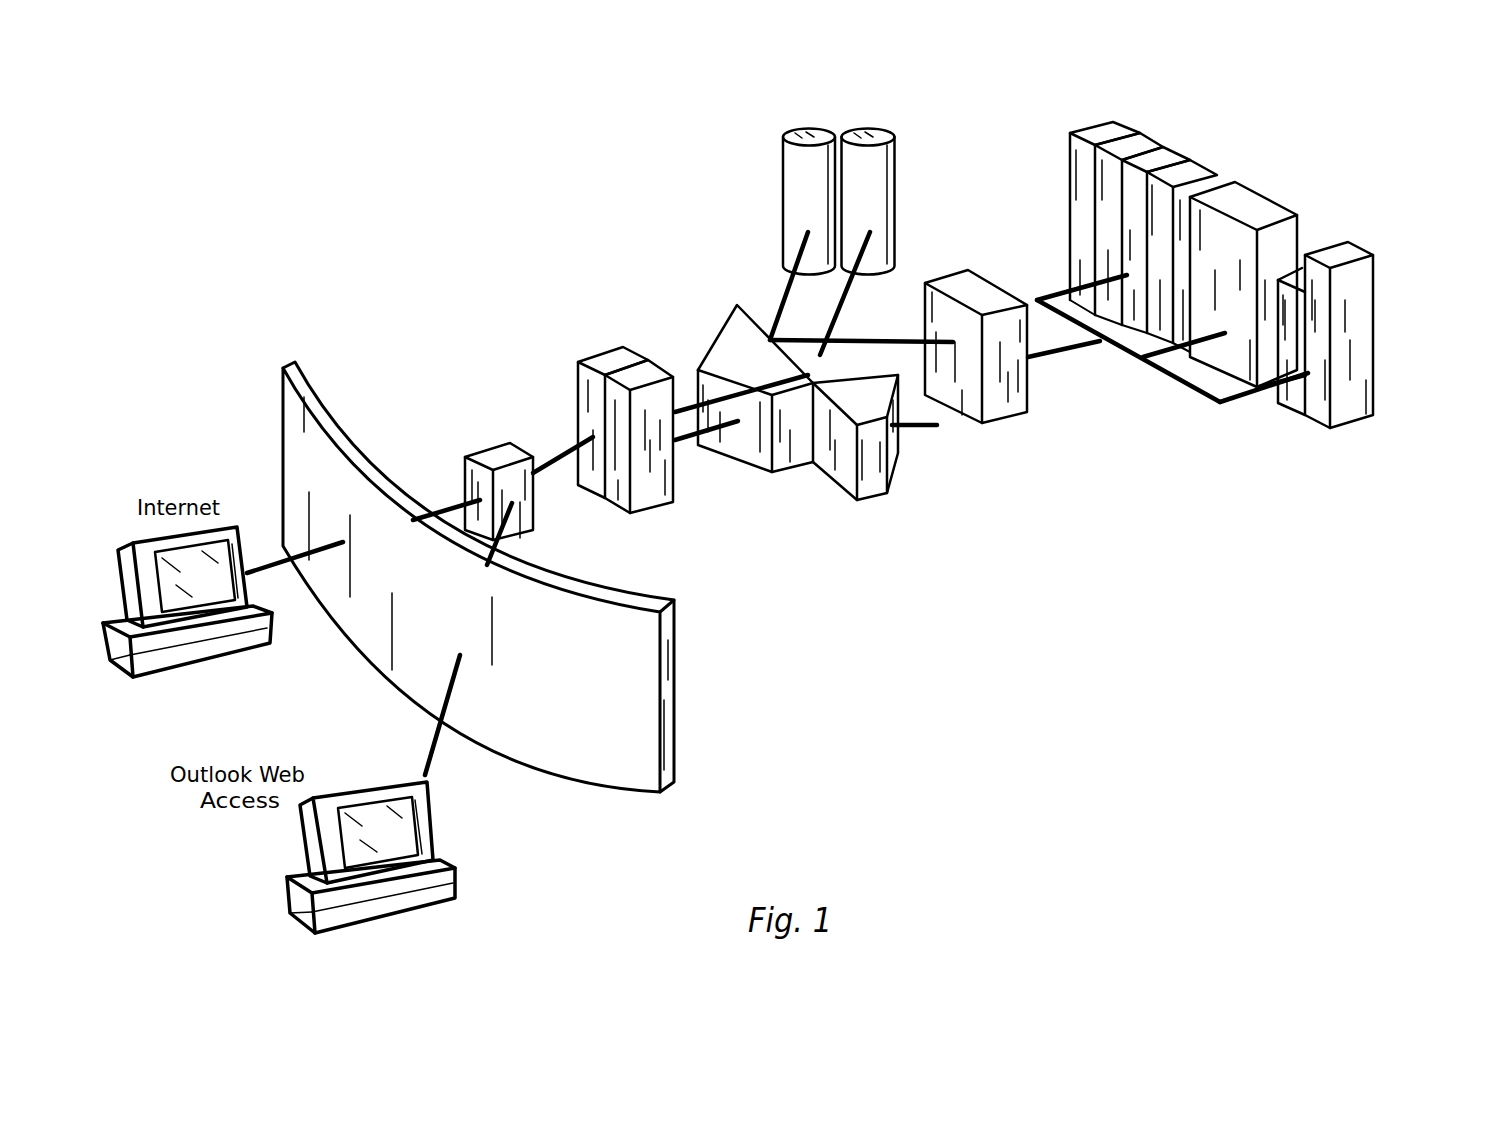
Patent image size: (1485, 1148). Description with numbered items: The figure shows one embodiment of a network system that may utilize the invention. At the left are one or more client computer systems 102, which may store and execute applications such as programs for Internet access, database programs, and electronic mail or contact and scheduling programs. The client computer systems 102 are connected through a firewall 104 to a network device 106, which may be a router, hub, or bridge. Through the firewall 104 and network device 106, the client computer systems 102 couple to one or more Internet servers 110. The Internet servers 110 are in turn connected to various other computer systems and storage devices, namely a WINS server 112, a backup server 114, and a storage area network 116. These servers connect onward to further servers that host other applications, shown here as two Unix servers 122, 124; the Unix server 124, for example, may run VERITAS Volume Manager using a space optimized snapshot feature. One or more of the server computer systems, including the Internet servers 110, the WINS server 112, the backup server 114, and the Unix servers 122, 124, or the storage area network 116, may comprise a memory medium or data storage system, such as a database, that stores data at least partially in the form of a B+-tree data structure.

The client computer system 102 is at (203, 663).
The firewall 104 is at (291, 360).
The network device 106 is at (493, 455).
The Internet servers 110 is at (597, 357).
The WINS server 112 is at (798, 421).
The backup server 114 is at (1005, 422).
The storage area network 116 is at (869, 114).
The Unix server 122 is at (1343, 428).
The Unix server 124 is at (1205, 165).